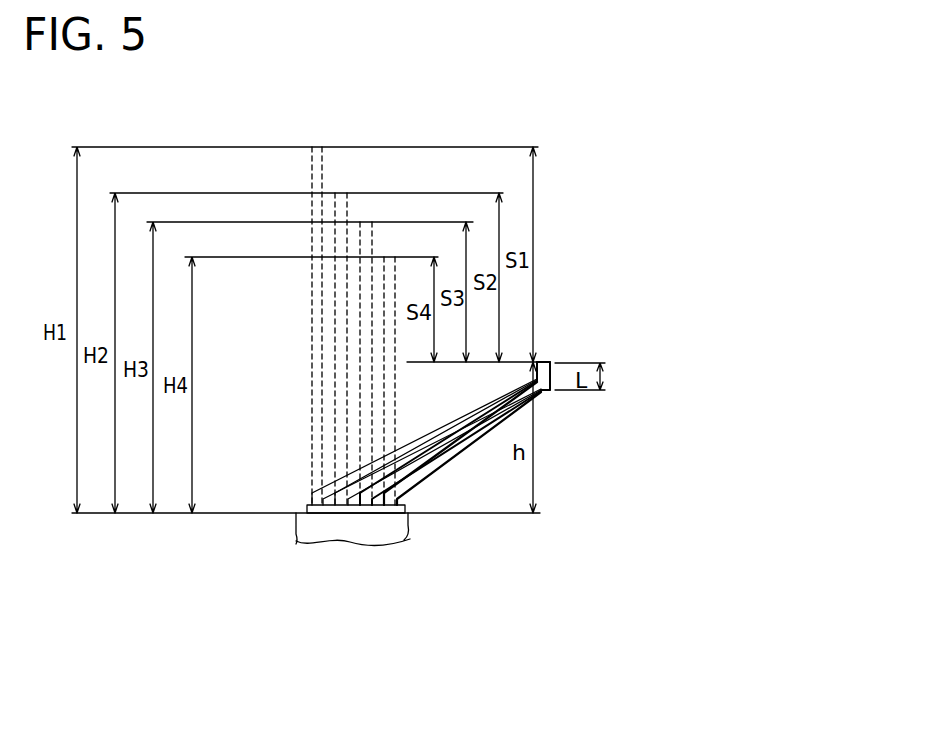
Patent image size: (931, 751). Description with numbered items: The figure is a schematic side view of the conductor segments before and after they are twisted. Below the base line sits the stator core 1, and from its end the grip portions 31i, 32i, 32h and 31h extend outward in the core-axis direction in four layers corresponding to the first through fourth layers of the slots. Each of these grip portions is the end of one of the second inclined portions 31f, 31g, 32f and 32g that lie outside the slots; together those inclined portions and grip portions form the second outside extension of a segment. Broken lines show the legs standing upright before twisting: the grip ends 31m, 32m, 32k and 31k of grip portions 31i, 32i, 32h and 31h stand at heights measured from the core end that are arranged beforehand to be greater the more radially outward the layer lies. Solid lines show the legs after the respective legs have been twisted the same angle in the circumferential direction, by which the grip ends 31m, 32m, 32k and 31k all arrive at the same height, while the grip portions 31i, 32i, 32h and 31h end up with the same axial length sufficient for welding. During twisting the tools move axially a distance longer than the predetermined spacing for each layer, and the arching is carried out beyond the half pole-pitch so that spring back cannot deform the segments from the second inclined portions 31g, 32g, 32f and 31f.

The stator core 1 is at (302, 528).
The grip end 31m is at (312, 147).
The grip end 32m is at (336, 193).
The grip end 32k is at (361, 222).
The grip end 31k is at (387, 257).
The second inclined portion 31g is at (330, 513).
The second inclined portion 32g is at (355, 513).
The second inclined portion 32f is at (380, 513).
The second inclined portion 31f is at (422, 473).
The grip portion 31h is at (550, 392).
The grip portion 31i is at (543, 376).
The grip portion 32h is at (543, 376).
The grip portion 32i is at (543, 376).